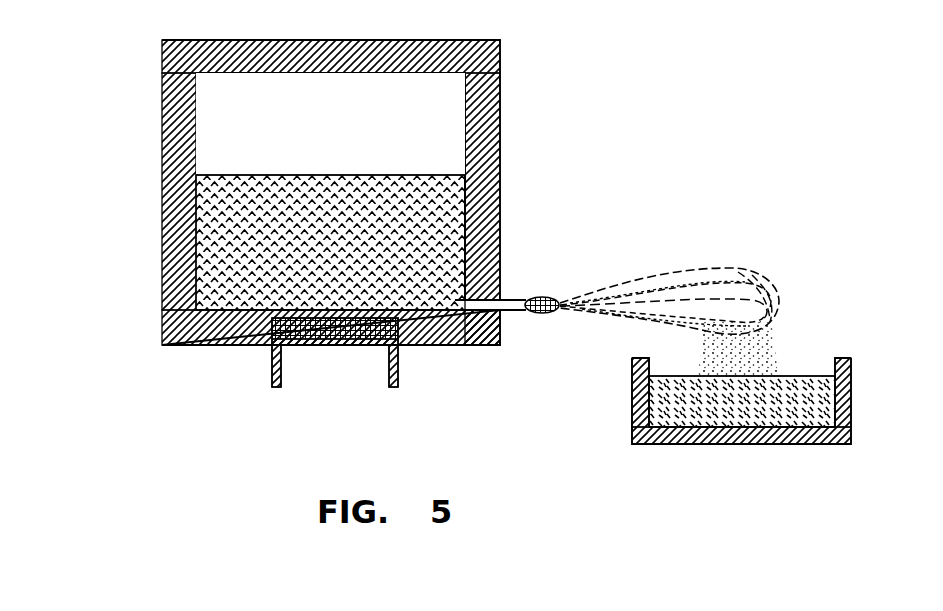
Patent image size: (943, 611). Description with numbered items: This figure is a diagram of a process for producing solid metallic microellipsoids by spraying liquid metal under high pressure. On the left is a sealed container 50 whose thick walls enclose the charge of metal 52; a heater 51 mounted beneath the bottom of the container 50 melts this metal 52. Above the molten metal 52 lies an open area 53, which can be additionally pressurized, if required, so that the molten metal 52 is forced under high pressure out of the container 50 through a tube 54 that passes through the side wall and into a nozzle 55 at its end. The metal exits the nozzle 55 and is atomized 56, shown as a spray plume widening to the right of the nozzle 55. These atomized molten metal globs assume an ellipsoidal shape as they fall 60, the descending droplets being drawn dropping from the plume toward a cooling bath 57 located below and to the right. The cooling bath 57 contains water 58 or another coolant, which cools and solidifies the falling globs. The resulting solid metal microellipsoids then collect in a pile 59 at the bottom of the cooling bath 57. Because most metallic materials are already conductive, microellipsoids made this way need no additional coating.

The sealed container 50 is at (173, 130).
The heater 51 is at (307, 343).
The metal 52 is at (415, 222).
The area above the molten metal 53 is at (413, 140).
The tube 54 is at (512, 300).
The nozzle 55 is at (552, 298).
The atomized metal 56 is at (610, 295).
The cooling bath 57 is at (632, 395).
The water 58 is at (647, 445).
The pile 59 is at (703, 440).
The fall 60 is at (745, 355).